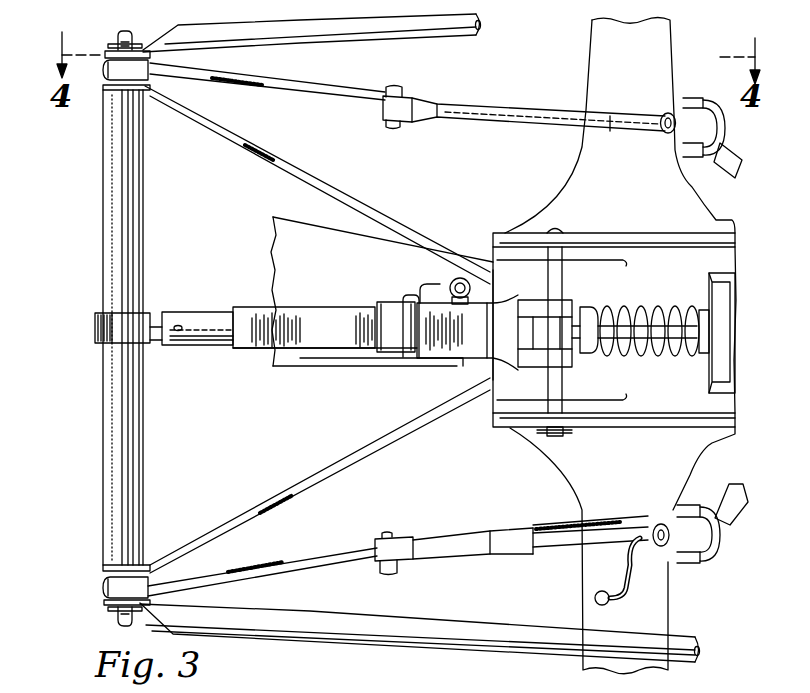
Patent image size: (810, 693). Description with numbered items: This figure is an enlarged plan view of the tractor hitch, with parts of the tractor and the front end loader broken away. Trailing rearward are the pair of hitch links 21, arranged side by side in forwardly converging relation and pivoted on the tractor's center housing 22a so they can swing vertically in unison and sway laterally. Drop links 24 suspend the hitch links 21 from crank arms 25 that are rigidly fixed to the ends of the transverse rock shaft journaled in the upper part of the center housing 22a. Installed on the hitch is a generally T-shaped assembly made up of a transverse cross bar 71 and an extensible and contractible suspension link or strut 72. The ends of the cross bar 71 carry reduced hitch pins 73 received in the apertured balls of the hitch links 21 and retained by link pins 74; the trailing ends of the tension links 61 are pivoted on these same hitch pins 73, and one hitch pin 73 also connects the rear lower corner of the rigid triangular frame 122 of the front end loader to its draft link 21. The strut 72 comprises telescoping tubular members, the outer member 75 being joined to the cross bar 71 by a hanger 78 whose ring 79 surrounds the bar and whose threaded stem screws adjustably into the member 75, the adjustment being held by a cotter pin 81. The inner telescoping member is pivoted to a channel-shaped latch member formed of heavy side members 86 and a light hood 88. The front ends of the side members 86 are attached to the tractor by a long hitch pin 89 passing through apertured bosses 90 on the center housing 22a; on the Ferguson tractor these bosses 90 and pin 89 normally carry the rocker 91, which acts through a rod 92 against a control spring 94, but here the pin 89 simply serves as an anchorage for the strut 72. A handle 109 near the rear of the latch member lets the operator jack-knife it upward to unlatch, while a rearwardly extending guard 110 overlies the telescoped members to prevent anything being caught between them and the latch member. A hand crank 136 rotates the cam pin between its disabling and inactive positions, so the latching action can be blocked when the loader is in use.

The hitch links 21 is at (346, 99).
The center housing 22a is at (490, 405).
The drop links 24 is at (505, 107).
The crank arms 25 is at (730, 160).
The tension links 61 is at (288, 163).
The cross bar 71 is at (128, 432).
The suspension link 72 is at (313, 306).
The hitch pins 73 is at (122, 32).
The link pins 74 is at (113, 44).
The outer telescoping member 75 is at (201, 320).
The hanger 78 is at (150, 310).
The ring 79 is at (100, 330).
The cotter pin 81 is at (178, 332).
The side members 86 is at (386, 302).
The hood 88 is at (460, 345).
The hitch pin 89 is at (548, 272).
The apertured bosses 90 is at (602, 260).
The rocker 91 is at (572, 308).
The rod 92 is at (656, 308).
The control spring 94 is at (650, 350).
The handle 109 is at (415, 348).
The guard 110 is at (258, 342).
The triangular frame 122 is at (432, 42).
The hand crank 136 is at (437, 281).